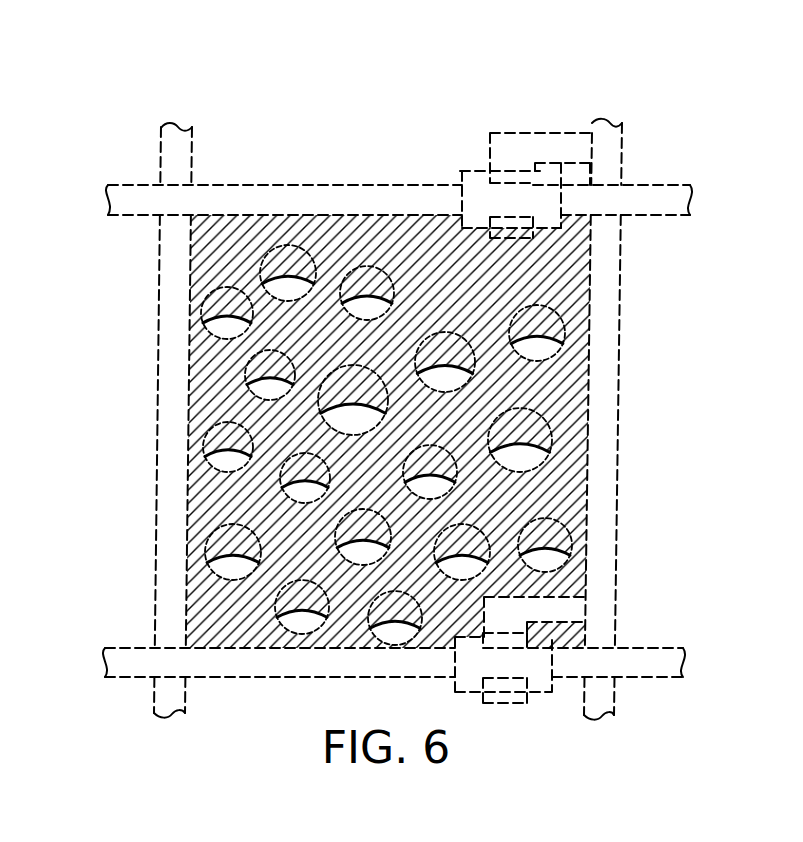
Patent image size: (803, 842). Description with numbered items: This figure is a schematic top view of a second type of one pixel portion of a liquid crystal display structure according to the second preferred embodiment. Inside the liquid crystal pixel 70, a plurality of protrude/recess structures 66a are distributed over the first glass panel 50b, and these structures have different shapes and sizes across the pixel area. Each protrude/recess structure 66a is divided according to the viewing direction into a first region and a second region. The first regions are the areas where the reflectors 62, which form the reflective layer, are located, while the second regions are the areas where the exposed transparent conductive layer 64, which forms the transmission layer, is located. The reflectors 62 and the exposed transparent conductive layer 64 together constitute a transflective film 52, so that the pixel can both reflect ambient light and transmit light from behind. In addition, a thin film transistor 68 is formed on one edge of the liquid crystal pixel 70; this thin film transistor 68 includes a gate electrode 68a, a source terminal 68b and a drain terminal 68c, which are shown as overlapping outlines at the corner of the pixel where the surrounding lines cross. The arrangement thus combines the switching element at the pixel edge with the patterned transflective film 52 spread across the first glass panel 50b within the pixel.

The first glass panel 50b is at (456, 295).
The transflective film 52 is at (582, 399).
The reflectors 62 is at (457, 355).
The exposed transparent conductive layer 64 is at (420, 482).
The protrude/recess structures 66a is at (373, 262).
The thin film transistor 68 is at (502, 121).
The gate electrode 68a is at (545, 195).
The source terminal 68b is at (496, 172).
The drain terminal 68c is at (503, 224).
The liquid crystal pixel 70 is at (137, 330).